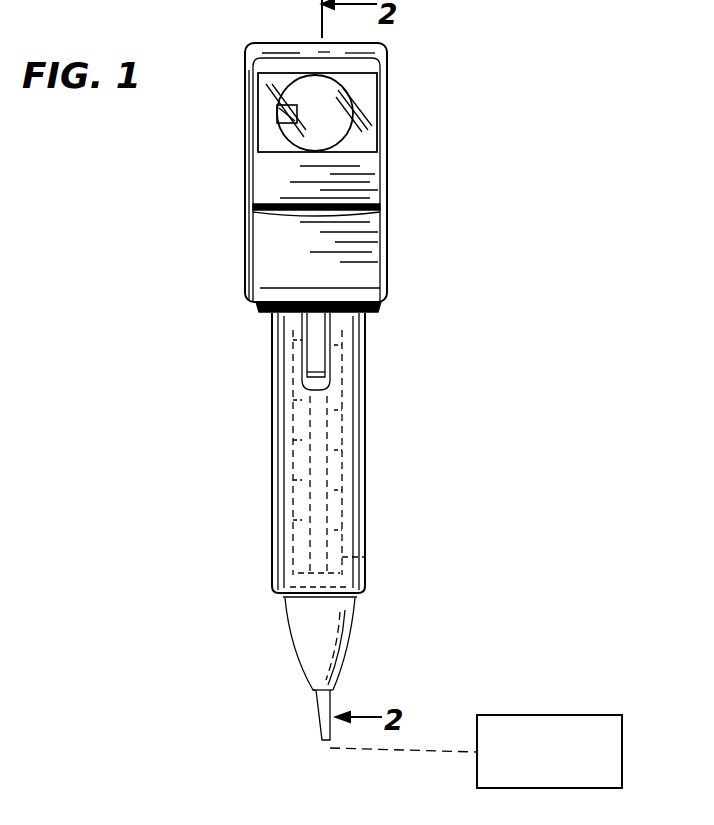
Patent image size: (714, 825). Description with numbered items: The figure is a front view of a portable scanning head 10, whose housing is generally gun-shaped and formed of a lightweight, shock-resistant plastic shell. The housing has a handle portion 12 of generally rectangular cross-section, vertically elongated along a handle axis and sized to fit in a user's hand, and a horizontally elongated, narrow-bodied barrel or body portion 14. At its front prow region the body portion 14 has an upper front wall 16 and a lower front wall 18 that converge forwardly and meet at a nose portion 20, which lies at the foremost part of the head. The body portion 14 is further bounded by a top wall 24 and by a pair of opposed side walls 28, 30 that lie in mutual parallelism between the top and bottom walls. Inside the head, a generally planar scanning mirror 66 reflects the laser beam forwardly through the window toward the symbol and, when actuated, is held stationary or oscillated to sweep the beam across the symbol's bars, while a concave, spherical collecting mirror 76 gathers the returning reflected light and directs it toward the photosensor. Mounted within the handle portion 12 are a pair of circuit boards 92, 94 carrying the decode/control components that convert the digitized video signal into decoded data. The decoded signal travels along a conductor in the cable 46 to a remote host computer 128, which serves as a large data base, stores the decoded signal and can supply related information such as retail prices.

The head 10 is at (403, 275).
The handle portion 12 is at (375, 498).
The body portion 14 is at (390, 246).
The upper front wall 16 is at (265, 182).
The lower front wall 18 is at (250, 278).
The nose portion 20 is at (260, 207).
The top wall 24 is at (258, 50).
The side wall 28 is at (387, 108).
The side wall 30 is at (245, 122).
The cable 46 is at (320, 712).
The scanning mirror 66 is at (280, 110).
The collecting mirror 76 is at (341, 94).
The circuit board 92 is at (365, 557).
The circuit board 94 is at (300, 526).
The host computer 128 is at (595, 714).